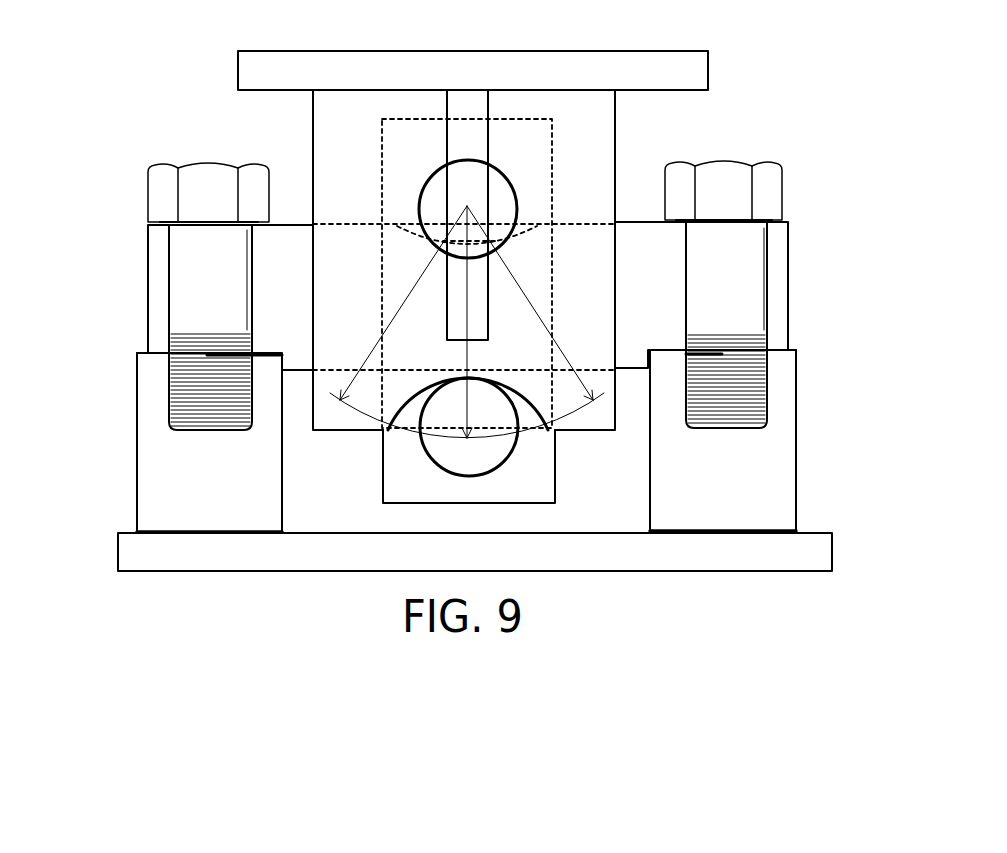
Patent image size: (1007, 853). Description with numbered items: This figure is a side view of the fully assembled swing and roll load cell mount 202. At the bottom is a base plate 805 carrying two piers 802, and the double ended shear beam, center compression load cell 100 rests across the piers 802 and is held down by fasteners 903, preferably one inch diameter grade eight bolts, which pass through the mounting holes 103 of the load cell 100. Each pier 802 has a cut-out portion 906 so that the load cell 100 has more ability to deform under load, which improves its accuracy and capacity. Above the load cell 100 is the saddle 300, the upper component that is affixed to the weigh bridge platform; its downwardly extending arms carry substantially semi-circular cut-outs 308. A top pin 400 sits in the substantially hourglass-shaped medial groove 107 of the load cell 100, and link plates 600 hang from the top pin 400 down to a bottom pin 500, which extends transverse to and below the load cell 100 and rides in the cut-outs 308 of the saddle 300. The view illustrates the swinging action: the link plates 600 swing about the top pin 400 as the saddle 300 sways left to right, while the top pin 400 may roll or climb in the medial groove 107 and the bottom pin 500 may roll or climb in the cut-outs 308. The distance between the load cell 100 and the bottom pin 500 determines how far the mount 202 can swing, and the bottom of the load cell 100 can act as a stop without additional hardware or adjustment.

The medial groove 107 is at (492, 237).
The saddle 300 is at (725, 78).
The top pin 400 is at (518, 197).
The fasteners 903 is at (157, 167).
The load cell 100 is at (148, 240).
The mounting holes 103 is at (183, 305).
The cut-out portion 906 is at (273, 358).
The piers 802 is at (137, 477).
The semi-circular cut-outs 308 is at (410, 403).
The bottom pin 500 is at (513, 453).
The link plates 600 is at (400, 505).
The base plate 805 is at (705, 572).
The load cell mount 202 is at (757, 715).